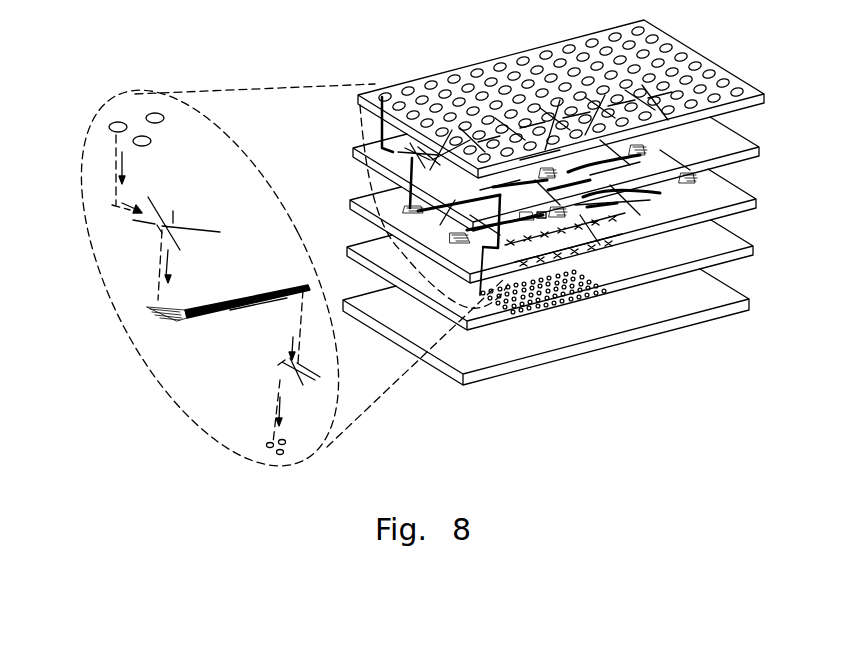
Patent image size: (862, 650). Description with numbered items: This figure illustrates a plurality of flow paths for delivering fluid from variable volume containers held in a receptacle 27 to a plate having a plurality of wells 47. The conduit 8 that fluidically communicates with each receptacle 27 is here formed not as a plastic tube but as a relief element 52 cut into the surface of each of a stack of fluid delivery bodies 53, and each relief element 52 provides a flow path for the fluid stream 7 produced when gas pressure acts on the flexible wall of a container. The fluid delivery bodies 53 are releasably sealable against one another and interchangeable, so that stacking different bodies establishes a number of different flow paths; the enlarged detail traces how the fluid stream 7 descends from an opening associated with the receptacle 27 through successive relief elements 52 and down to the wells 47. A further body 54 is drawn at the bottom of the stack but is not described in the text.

The fluid stream 7 is at (362, 140).
The conduit 8 is at (142, 222).
The receptacle 27 is at (383, 95).
The wells 47 is at (285, 442).
The relief element 52 is at (293, 370).
The fluid delivery bodies 53 is at (740, 233).
The bottom plate 54 is at (735, 287).